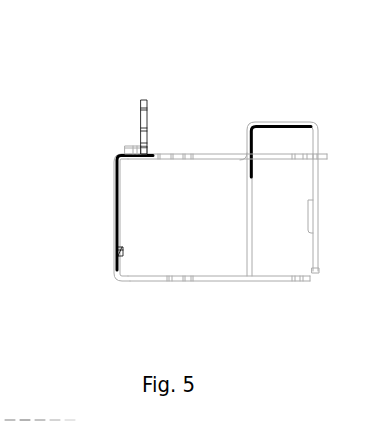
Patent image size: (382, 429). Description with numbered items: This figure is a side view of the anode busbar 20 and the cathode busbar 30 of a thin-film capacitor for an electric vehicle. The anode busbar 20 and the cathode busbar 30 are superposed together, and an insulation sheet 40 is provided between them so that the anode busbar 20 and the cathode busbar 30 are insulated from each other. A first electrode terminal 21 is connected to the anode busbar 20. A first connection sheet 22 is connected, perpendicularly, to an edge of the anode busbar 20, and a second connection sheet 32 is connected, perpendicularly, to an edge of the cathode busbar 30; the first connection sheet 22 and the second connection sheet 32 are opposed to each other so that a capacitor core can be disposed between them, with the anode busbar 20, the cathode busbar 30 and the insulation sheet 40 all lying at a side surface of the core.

The anode busbar 20 is at (115, 238).
The first electrode terminal 21 is at (147, 122).
The first connection sheet 22 is at (195, 283).
The cathode busbar 30 is at (118, 253).
The second connection sheet 32 is at (188, 157).
The insulation sheet 40 is at (115, 183).